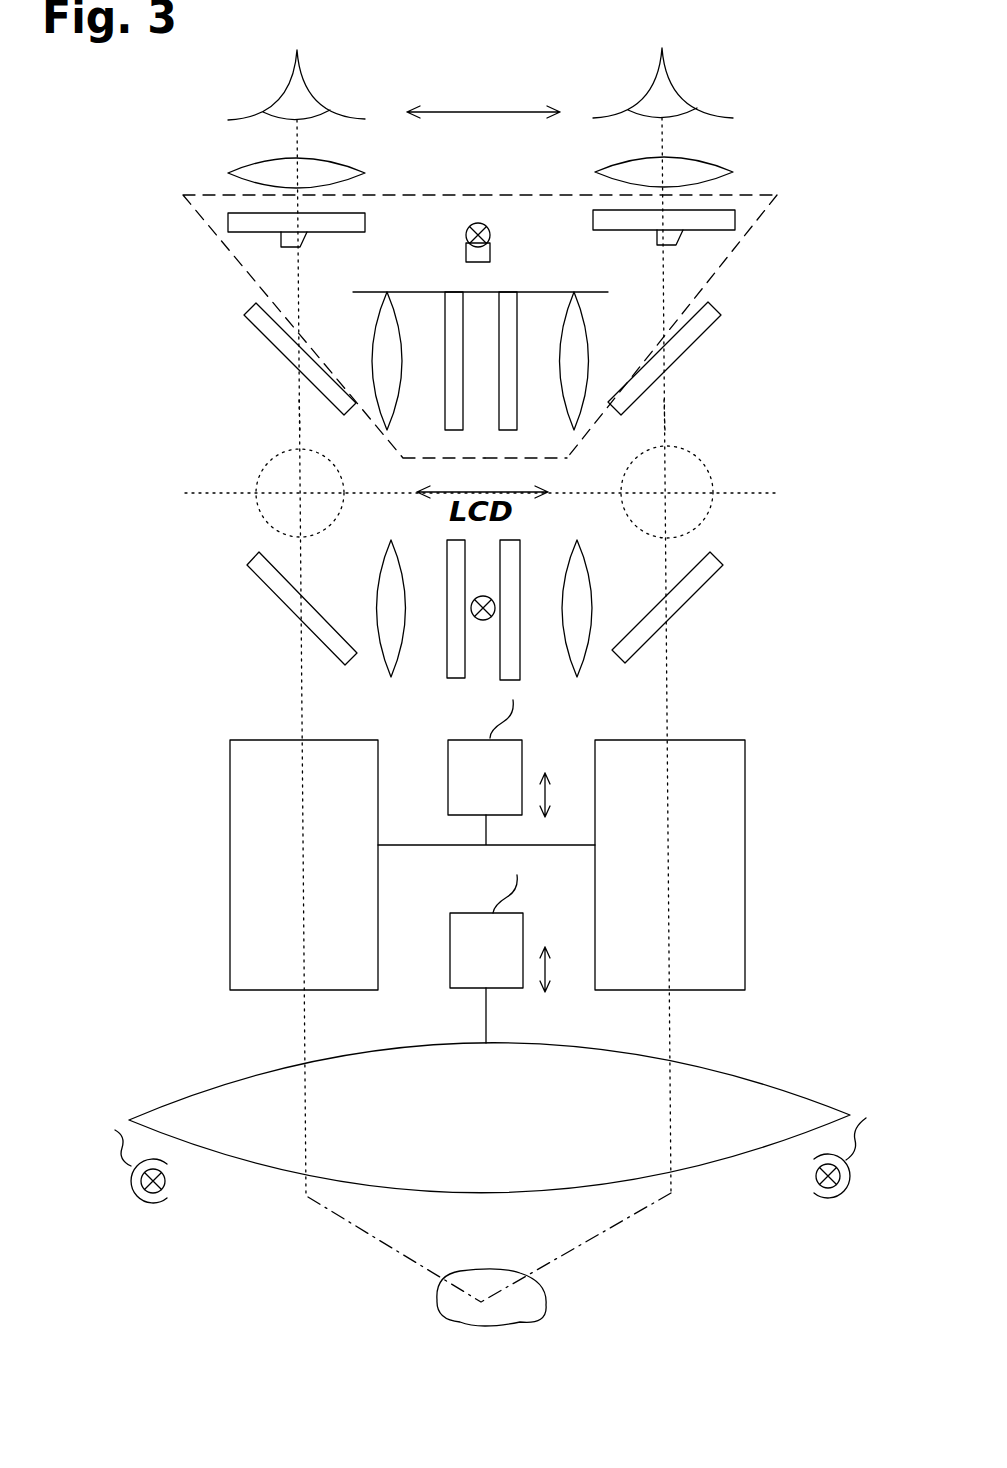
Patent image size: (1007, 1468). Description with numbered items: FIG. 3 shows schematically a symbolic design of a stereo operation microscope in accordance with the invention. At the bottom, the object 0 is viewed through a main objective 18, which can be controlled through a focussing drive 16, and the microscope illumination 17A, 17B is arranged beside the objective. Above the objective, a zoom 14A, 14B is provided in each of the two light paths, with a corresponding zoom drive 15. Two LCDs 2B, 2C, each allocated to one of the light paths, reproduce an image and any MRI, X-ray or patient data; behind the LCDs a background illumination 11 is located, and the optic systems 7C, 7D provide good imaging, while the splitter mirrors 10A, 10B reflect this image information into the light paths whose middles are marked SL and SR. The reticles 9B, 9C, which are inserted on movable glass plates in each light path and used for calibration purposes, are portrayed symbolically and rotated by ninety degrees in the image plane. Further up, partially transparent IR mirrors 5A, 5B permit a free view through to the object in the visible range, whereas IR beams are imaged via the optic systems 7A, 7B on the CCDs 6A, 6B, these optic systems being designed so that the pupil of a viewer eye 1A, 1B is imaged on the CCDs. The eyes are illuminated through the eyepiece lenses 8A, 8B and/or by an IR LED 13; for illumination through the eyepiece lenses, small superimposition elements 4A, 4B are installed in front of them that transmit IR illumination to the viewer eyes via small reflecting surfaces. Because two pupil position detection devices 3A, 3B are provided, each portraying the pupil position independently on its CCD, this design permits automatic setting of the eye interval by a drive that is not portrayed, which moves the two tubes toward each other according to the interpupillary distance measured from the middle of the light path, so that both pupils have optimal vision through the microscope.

The viewer eye 1A is at (287, 97).
The viewer eye 1B is at (667, 87).
The eyepiece lens 8A is at (267, 165).
The eyepiece lens 8B is at (700, 165).
The superimposition element 4A is at (298, 213).
The superimposition element 4B is at (730, 218).
The IR LED 13 is at (476, 223).
The pupil position detection device 3A is at (277, 287).
The pupil position detection device 3B is at (740, 238).
The CCD 6A is at (450, 307).
The CCD 6B is at (510, 322).
The semi-reflecting IR mirror 5A is at (267, 327).
The semi-reflecting IR mirror 5B is at (707, 320).
The imaging optic system 7A is at (383, 358).
The imaging optic system 7B is at (580, 350).
The light path SL is at (300, 413).
The light path SR is at (665, 410).
The reticle 9B is at (262, 473).
The reticle 9C is at (693, 473).
The imaging optic system 7C is at (385, 555).
The imaging optic system 7D is at (580, 560).
The splitter mirror 10A is at (263, 568).
The splitter mirror 10B is at (703, 575).
The LCD background illumination 11 is at (470, 610).
The LCD 2B is at (455, 638).
The LCD 2C is at (512, 640).
The zoom drive 15 is at (502, 747).
The focussing drive 16 is at (493, 950).
The zoom 14A is at (260, 783).
The zoom 14B is at (720, 778).
The main objective 18 is at (717, 1080).
The illumination 17A is at (174, 1178).
The illumination 17B is at (809, 1168).
The object 0 is at (534, 1294).